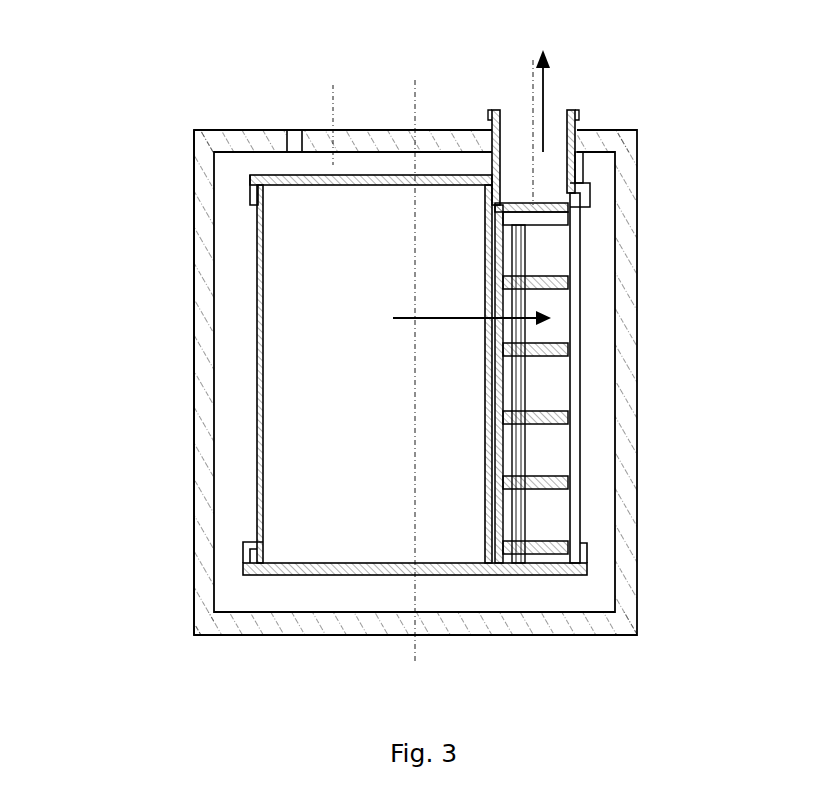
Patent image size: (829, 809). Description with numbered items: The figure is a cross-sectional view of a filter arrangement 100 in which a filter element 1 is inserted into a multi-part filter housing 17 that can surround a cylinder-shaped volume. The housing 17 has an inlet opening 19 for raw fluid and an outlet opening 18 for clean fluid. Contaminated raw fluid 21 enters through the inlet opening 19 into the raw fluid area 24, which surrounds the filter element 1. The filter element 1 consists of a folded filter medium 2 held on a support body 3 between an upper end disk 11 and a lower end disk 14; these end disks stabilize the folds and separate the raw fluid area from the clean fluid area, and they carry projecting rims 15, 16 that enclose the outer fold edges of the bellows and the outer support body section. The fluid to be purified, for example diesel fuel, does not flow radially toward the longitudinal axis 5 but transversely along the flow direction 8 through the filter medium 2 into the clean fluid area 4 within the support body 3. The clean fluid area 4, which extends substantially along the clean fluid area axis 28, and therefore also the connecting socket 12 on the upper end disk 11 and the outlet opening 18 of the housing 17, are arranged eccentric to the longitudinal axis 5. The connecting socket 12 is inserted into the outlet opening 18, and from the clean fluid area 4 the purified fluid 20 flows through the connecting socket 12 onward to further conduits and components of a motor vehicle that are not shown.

The filter arrangement 100 is at (105, 97).
The filter element 1 is at (222, 382).
The filter medium 2 is at (349, 404).
The support body 3 is at (536, 576).
The clean fluid area 4 is at (548, 452).
The longitudinal axis 5 is at (416, 90).
The flow direction 8 is at (470, 320).
The upper end disk 11 is at (316, 185).
The connecting socket 12 is at (494, 118).
The end disk 14 is at (315, 565).
The projecting rim 15 is at (253, 198).
The projecting rim 16 is at (243, 555).
The filter housing 17 is at (622, 231).
The outlet opening 18 is at (578, 135).
The inlet opening 19 is at (302, 152).
The purified fluid 20 is at (545, 80).
The raw fluid 21 is at (236, 185).
The raw fluid area 24 is at (260, 598).
The clean fluid area axis 28 is at (530, 180).